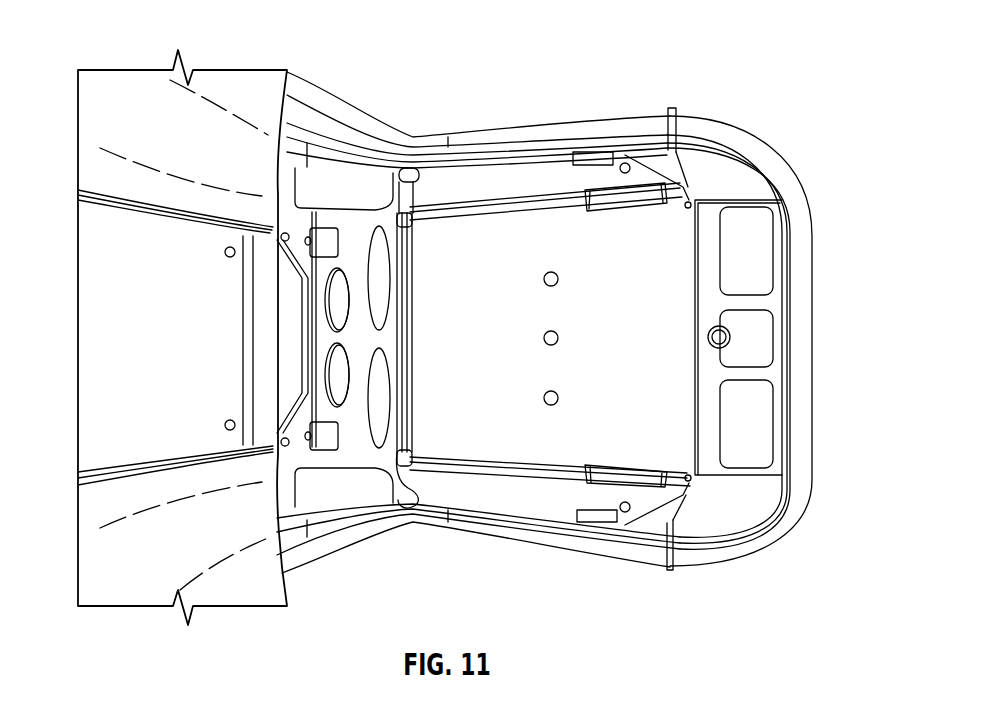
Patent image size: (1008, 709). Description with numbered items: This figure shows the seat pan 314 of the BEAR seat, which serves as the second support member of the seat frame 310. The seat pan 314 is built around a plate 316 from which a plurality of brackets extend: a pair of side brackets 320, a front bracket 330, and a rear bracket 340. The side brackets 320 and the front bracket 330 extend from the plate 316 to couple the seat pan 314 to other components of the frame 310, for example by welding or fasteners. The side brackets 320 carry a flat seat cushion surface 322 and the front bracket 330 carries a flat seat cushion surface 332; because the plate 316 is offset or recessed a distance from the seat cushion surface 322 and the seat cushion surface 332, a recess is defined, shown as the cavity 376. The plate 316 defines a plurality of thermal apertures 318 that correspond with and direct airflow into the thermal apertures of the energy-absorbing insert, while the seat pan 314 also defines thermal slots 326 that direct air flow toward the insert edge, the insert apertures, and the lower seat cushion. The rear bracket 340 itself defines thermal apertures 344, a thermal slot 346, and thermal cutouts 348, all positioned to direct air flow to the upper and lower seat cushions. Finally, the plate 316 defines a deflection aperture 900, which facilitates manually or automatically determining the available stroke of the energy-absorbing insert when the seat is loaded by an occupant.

The frame 310 is at (298, 110).
The seat pan 314 is at (526, 117).
The plate 316 is at (625, 232).
The thermal apertures 318 is at (544, 280).
The side brackets 320 is at (588, 134).
The seat cushion surface 322 is at (452, 195).
The thermal slots 326 is at (692, 189).
The front bracket 330 is at (773, 308).
The seat cushion surface 332 is at (712, 273).
The rear bracket 340 is at (323, 267).
The thermal apertures 344 is at (333, 375).
The thermal slot 346 is at (385, 272).
The thermal cutouts 348 is at (315, 190).
The cavity 376 is at (531, 235).
The deflection aperture 900 is at (558, 338).